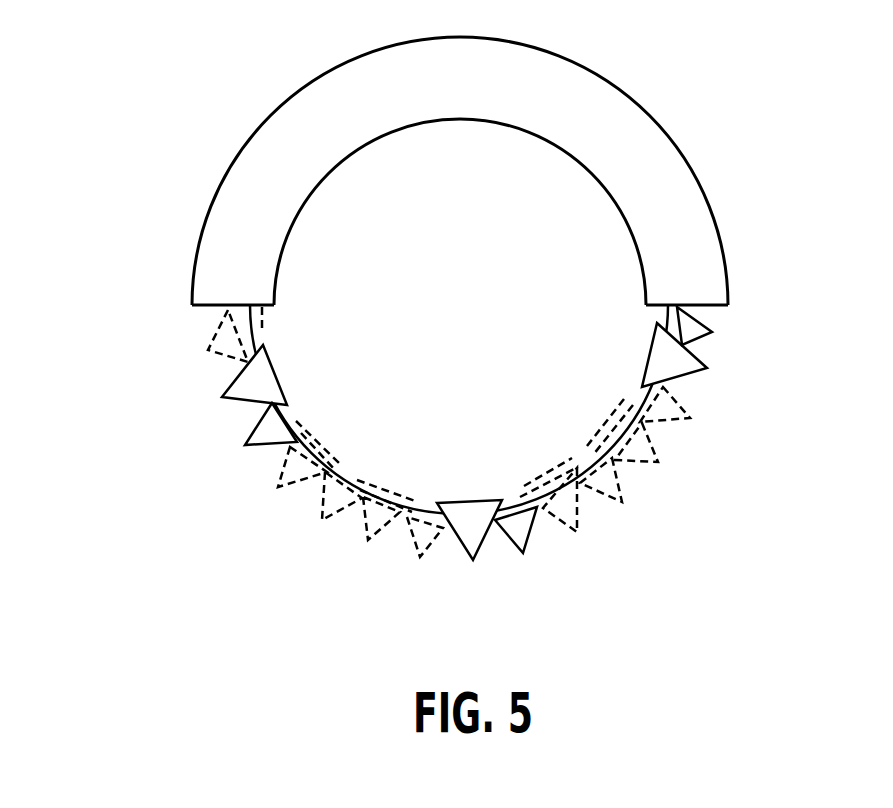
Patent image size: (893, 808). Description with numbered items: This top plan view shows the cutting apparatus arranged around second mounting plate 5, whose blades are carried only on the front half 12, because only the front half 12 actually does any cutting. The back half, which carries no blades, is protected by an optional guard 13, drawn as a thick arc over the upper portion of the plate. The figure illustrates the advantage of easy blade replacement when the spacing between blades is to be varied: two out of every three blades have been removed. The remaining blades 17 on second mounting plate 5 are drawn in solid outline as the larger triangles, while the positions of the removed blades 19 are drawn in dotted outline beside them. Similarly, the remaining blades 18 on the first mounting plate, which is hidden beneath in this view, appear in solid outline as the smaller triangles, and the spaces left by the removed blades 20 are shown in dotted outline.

The second mounting plate 5 is at (527, 445).
The front half 12 is at (583, 552).
The guard 13 is at (615, 115).
The remaining blades 17 is at (242, 381).
The remaining blades 18 is at (262, 426).
The removed blades 19 is at (282, 468).
The removed blades 20 is at (680, 398).